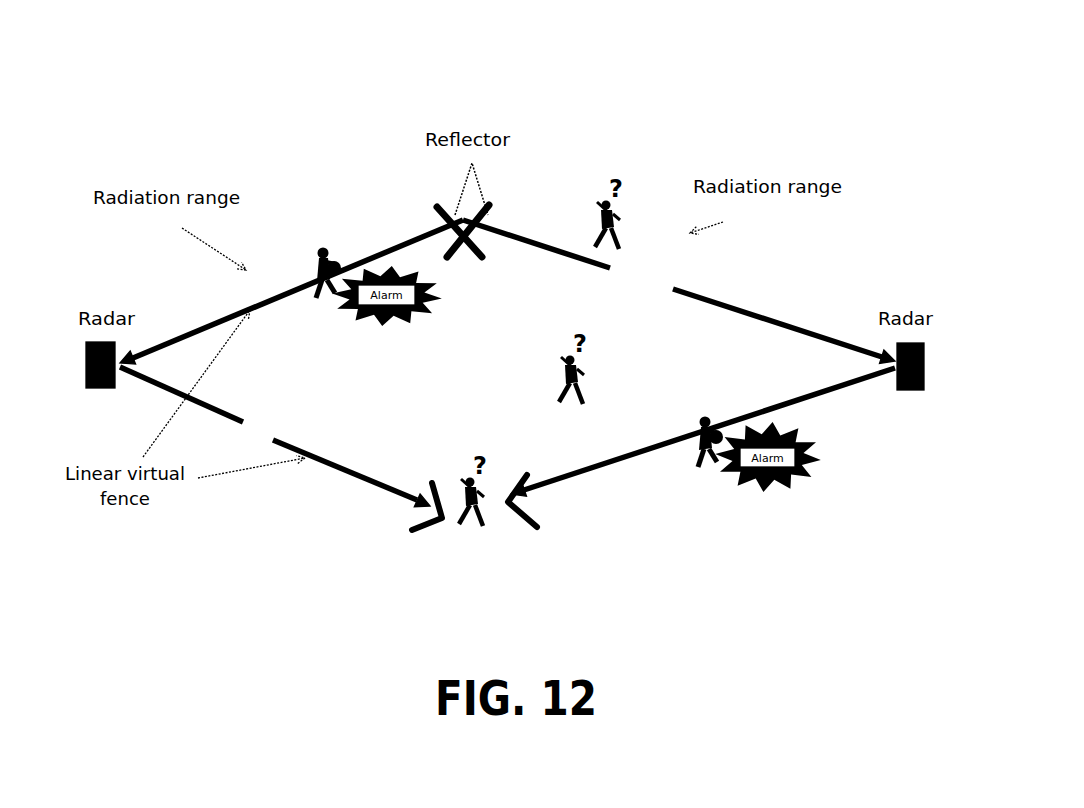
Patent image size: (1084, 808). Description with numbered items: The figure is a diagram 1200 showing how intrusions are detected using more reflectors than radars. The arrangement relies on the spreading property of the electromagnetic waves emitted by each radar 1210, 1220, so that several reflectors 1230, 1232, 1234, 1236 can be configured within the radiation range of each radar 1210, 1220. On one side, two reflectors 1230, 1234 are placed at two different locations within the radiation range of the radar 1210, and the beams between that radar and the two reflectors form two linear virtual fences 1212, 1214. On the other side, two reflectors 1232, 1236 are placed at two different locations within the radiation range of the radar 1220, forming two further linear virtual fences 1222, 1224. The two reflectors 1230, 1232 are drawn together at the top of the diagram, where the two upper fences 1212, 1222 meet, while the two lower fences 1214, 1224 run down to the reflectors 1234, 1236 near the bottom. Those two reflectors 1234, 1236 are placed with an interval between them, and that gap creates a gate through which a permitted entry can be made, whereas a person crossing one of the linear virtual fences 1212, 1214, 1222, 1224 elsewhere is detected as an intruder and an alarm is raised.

The diagram 1200 is at (505, 312).
The radar 1210 is at (119, 389).
The radar 1220 is at (862, 393).
The linear virtual fence 1212 is at (232, 320).
The linear virtual fence 1214 is at (305, 438).
The linear virtual fence 1222 is at (663, 297).
The linear virtual fence 1224 is at (812, 394).
The reflector 1230 is at (400, 197).
The reflector 1232 is at (536, 197).
The reflector 1234 is at (372, 538).
The reflector 1236 is at (576, 534).